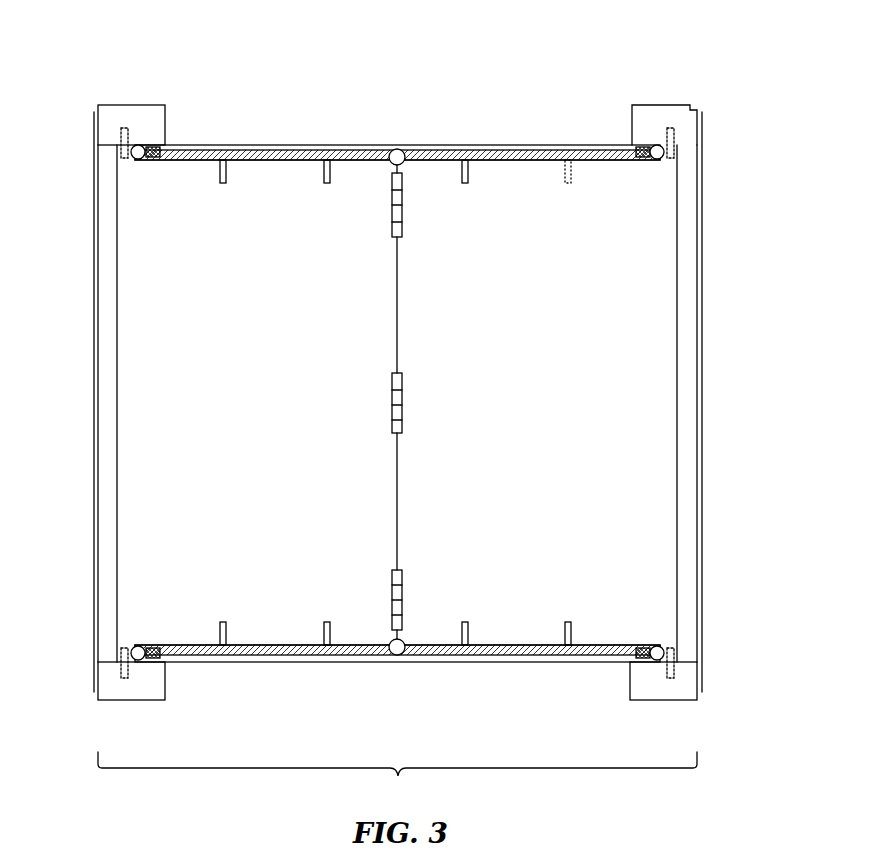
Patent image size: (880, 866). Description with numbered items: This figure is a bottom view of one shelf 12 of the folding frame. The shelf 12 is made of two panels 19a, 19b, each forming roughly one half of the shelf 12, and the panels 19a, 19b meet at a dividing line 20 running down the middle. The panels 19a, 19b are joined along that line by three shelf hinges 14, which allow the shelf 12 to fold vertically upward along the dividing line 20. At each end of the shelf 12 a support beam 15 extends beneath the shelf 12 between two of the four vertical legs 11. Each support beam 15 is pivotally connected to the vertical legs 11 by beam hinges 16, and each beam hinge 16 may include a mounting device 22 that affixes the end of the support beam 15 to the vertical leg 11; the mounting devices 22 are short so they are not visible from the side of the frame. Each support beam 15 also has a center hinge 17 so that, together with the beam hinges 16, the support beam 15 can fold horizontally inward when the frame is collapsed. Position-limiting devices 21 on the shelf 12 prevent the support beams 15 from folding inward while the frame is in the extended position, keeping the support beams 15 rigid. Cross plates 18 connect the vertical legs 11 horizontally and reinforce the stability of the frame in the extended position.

The vertical leg 11 is at (100, 107).
The shelf 12 is at (397, 775).
The shelf hinge 14 is at (403, 212).
The support beam 15 is at (122, 135).
The beam hinge 16 is at (137, 146).
The center hinge 17 is at (400, 150).
The cross plate 18 is at (95, 250).
The panel 19a is at (137, 480).
The panel 19b is at (658, 480).
The dividing line 20 is at (400, 272).
The position-limiting device 21 is at (226, 160).
The mounting device 22 is at (152, 147).